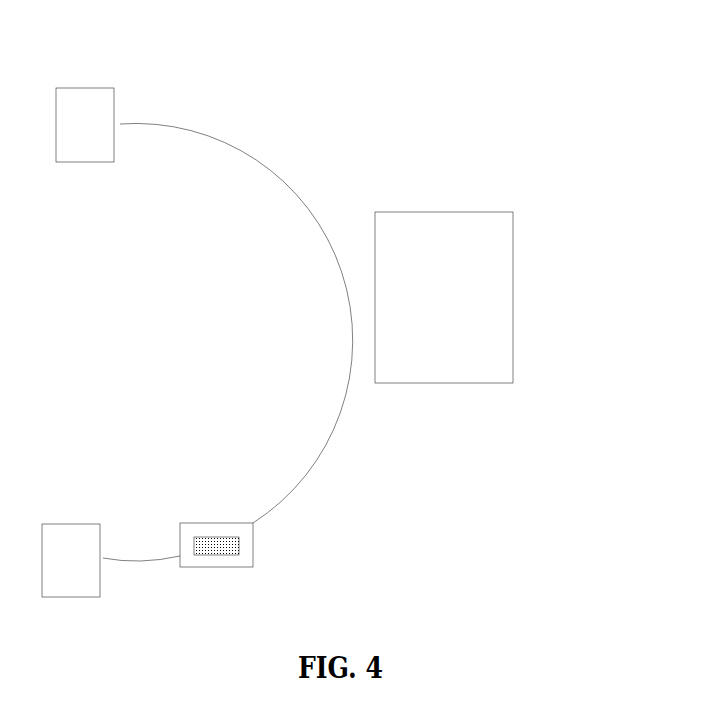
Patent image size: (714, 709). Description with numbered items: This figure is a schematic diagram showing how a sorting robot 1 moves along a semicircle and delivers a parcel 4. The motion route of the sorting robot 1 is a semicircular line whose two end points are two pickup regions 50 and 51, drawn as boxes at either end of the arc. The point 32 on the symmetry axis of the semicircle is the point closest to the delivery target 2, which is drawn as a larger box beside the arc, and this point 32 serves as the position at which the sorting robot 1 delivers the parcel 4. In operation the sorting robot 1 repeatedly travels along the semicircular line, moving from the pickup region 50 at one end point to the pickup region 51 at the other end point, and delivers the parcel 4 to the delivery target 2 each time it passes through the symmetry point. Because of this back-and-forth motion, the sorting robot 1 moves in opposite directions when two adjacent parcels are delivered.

The pickup region 50 is at (100, 101).
The pickup region 51 is at (63, 539).
The point 32 is at (352, 340).
The delivery target 2 is at (492, 284).
The sorting robot 1 is at (253, 545).
The parcel 4 is at (238, 547).